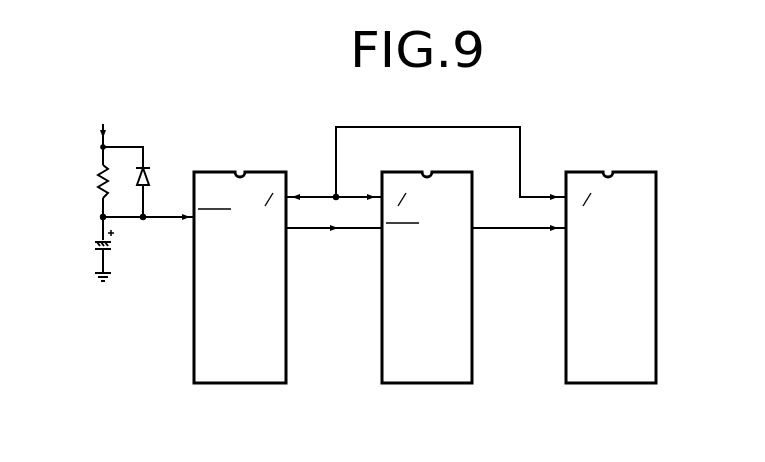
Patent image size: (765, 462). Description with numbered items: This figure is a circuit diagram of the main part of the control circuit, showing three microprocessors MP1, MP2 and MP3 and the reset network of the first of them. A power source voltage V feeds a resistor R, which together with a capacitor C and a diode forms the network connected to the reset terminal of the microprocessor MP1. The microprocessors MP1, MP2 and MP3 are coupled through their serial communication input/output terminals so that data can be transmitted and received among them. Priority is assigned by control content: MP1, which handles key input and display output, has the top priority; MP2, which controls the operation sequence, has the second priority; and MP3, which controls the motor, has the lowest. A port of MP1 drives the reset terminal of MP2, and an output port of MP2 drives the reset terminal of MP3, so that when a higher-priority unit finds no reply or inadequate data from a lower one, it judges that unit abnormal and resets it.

The microprocessor MP1 is at (240, 277).
The microprocessor MP2 is at (427, 277).
The microprocessor MP3 is at (611, 277).
The resistor R is at (100, 182).
The capacitor C is at (96, 247).
The power source voltage V is at (102, 120).